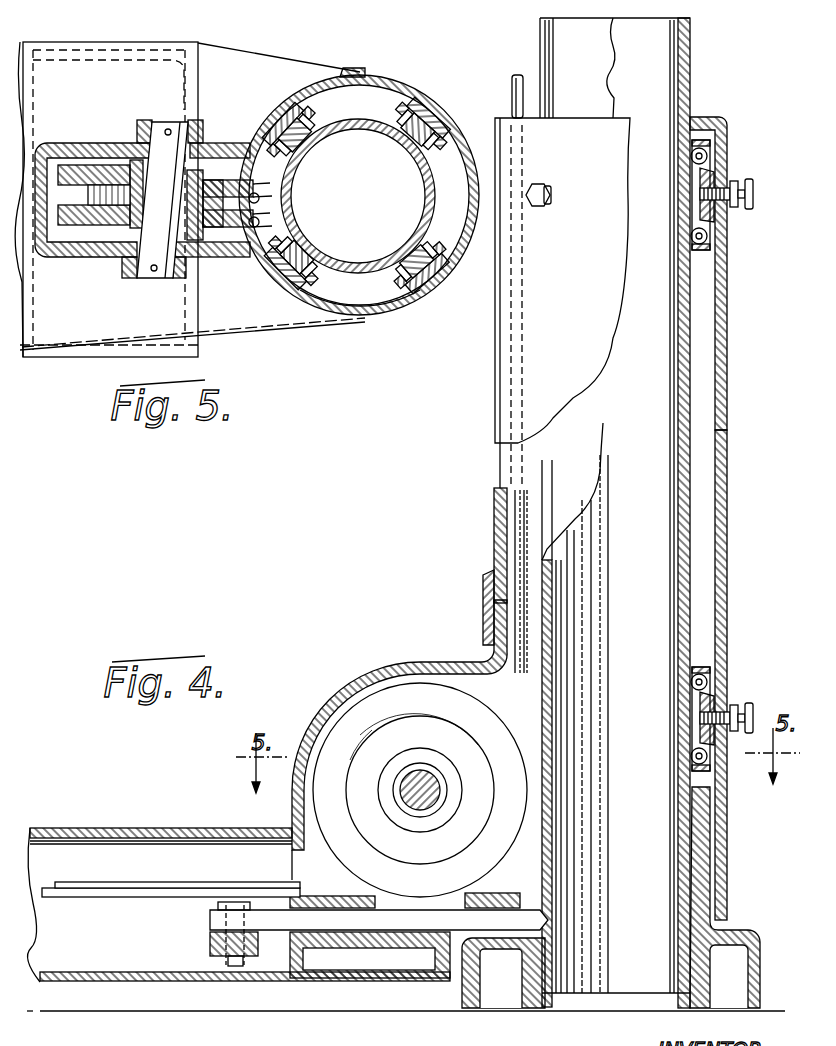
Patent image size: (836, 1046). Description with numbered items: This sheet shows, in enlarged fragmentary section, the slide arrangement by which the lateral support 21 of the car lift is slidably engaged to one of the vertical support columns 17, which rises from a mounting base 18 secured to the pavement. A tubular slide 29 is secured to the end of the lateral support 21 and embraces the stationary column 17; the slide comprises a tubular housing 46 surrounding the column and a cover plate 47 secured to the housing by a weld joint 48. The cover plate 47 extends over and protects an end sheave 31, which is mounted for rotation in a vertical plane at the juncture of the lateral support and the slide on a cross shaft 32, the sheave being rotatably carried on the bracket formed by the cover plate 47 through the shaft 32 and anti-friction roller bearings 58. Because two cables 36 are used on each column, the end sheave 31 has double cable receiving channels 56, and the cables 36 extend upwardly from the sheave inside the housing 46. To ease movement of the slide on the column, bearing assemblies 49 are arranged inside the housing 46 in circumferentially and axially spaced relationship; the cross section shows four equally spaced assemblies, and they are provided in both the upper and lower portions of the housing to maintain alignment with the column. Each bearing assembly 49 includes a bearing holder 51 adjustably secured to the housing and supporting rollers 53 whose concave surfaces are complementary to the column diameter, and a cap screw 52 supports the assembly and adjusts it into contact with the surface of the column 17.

In FIG. 4, the support column 17 is at (690, 58).
In FIG. 5, the support column 17 is at (364, 120).
In FIG. 4, the mounting base 18 is at (752, 934).
In FIG. 4, the lateral support 21 is at (118, 832).
In FIG. 4, the tubular slide 29 is at (727, 365).
In FIG. 5, the tubular slide 29 is at (440, 125).
In FIG. 4, the end sheave 31 is at (372, 705).
In FIG. 5, the end sheave 31 is at (87, 163).
In FIG. 4, the cross shaft 32 is at (424, 778).
In FIG. 5, the cross shaft 32 is at (168, 130).
In FIG. 5, the cable 36 is at (236, 248).
In FIG. 4, the tubular housing 46 is at (726, 503).
In FIG. 5, the tubular housing 46 is at (385, 315).
In FIG. 4, the cover plate 47 is at (392, 663).
In FIG. 4, the weld joint 48 is at (490, 569).
In FIG. 4, the bearing assembly 49 is at (713, 227).
In FIG. 5, the bearing assembly 49 is at (276, 109).
In FIG. 4, the bearing holder 51 is at (708, 178).
In FIG. 5, the bearing holder 51 is at (283, 95).
In FIG. 4, the cap screw 52 is at (753, 193).
In FIG. 4, the roller 53 is at (702, 148).
In FIG. 5, the roller 53 is at (290, 143).
In FIG. 5, the cable receiving channel 56 is at (55, 148).
In FIG. 5, the anti-friction roller bearing 58 is at (125, 148).